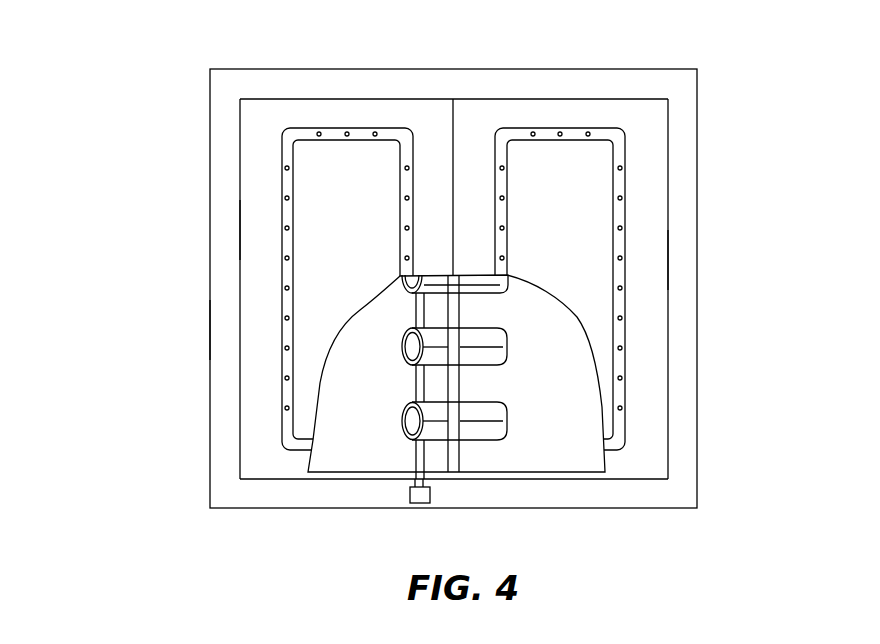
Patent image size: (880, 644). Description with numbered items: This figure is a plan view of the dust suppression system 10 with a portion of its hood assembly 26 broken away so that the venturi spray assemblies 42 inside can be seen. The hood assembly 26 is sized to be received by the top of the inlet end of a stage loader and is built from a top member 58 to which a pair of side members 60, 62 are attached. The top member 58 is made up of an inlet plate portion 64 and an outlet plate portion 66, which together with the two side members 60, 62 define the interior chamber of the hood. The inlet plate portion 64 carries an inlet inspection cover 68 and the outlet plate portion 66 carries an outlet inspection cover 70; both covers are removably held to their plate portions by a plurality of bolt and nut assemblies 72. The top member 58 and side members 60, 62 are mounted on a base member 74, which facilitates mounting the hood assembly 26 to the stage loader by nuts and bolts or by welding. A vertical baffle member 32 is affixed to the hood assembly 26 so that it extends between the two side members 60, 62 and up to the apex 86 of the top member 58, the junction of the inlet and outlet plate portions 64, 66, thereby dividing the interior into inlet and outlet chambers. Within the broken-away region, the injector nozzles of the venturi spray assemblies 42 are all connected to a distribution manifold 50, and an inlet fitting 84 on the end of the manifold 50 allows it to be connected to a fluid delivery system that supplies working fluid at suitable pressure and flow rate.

The dust suppression system 10 is at (130, 68).
The hood assembly 26 is at (230, 146).
The baffle member 32 is at (459, 455).
The venturi spray assemblies 42 is at (484, 395).
The distribution manifold 50 is at (416, 380).
The top member 58 is at (678, 143).
The side member 60 is at (570, 479).
The side member 62 is at (507, 98).
The inlet plate portion 64 is at (240, 231).
The outlet plate portion 66 is at (668, 257).
The inlet inspection cover 68 is at (360, 236).
The outlet inspection cover 70 is at (576, 236).
The bolt and nut assemblies 72 is at (622, 347).
The base member 74 is at (210, 327).
The inlet fitting 84 is at (410, 495).
The apex 86 is at (453, 120).